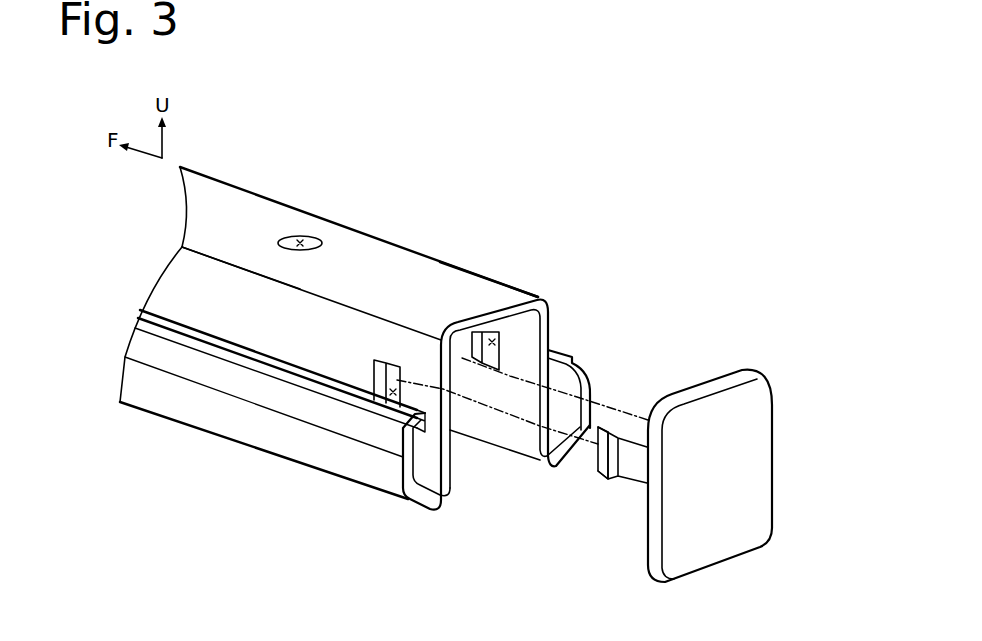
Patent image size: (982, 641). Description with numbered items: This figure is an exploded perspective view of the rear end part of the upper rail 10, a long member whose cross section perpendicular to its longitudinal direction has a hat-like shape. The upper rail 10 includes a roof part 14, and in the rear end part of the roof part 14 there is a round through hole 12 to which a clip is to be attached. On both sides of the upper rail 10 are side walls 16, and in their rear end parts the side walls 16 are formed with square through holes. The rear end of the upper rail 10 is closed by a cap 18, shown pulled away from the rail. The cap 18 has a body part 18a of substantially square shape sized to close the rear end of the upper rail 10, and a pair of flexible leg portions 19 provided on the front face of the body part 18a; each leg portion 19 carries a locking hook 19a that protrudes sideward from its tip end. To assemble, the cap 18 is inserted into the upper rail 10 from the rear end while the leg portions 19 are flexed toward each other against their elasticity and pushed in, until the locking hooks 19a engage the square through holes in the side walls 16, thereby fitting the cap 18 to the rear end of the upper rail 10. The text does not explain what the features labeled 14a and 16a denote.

The upper rail 10 is at (507, 297).
The through hole 12 is at (299, 238).
The roof part 14 is at (358, 265).
The upper wall of rail 14a is at (415, 268).
The side wall 16 is at (525, 332).
The engagement tab 16a is at (492, 338).
The cap 18 is at (762, 358).
The body part 18a is at (750, 467).
The leg portion 19 is at (652, 405).
The locking hook 19a is at (602, 466).